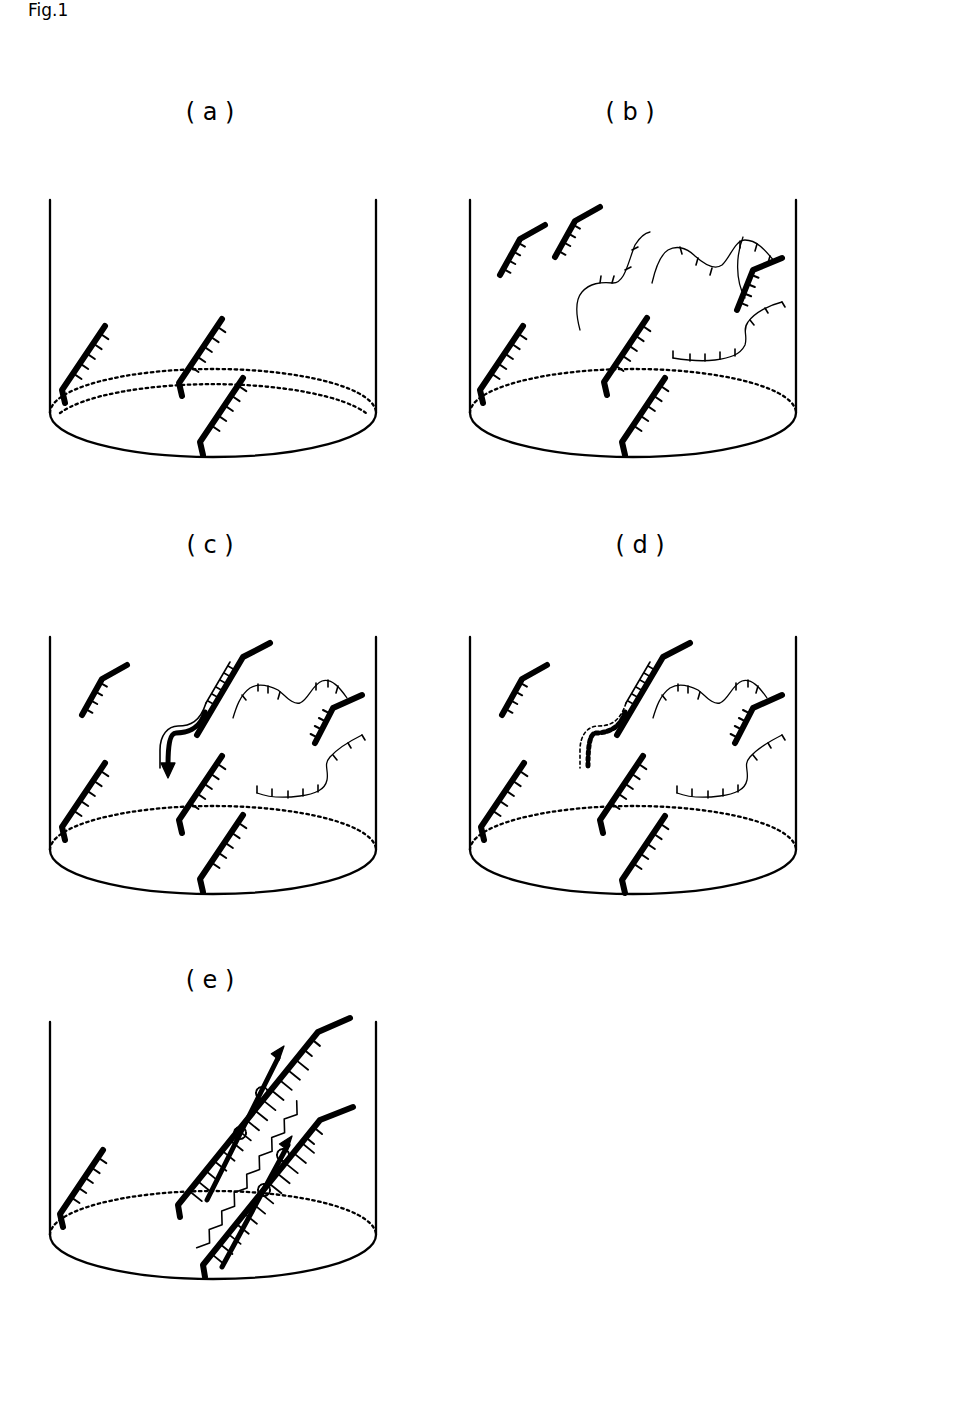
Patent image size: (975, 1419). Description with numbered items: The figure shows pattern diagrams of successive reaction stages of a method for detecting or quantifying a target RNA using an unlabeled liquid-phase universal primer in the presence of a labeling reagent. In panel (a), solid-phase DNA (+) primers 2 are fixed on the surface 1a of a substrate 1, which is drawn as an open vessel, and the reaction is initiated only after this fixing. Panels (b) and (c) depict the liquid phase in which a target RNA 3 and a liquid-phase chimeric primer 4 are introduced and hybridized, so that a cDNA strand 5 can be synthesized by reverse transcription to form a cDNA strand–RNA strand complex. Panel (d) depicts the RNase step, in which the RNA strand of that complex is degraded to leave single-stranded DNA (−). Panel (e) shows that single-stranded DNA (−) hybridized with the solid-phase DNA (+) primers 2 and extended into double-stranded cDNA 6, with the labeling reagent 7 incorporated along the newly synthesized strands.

The substrate 1 is at (377, 305).
The surface of substrate 1a is at (332, 407).
The solid-phase DNA (+) primer 2 is at (80, 356).
The target nucleic acid 3 is at (743, 237).
The hybridized target nucleic acid 4 is at (790, 255).
The primer / extending strand 5 is at (190, 718).
The double-stranded cDNA 6 is at (310, 1045).
The labeled nucleotide 7 is at (280, 1097).